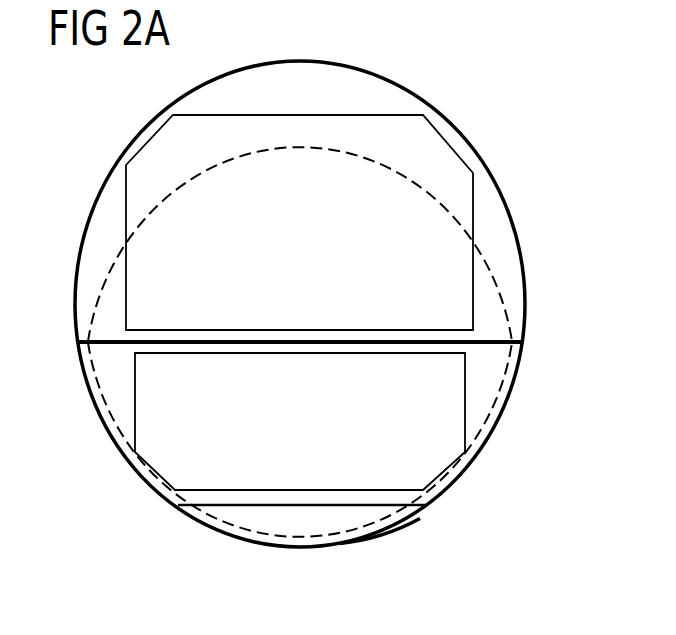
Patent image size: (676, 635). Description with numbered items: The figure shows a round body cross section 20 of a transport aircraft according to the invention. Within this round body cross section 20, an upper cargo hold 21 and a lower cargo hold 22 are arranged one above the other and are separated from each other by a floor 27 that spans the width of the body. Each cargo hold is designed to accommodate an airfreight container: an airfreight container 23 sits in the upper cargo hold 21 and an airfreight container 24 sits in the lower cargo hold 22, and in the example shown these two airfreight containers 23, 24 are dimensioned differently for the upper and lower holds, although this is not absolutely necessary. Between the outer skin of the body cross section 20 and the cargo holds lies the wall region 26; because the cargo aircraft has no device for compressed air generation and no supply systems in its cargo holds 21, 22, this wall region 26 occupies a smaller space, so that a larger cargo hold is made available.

The body cross section 20 is at (405, 88).
The upper cargo hold 21 is at (490, 278).
The lower cargo hold 22 is at (487, 380).
The airfreight container 23 is at (118, 197).
The airfreight container 24 is at (147, 405).
The wall region 26 is at (375, 528).
The floor 27 is at (300, 342).